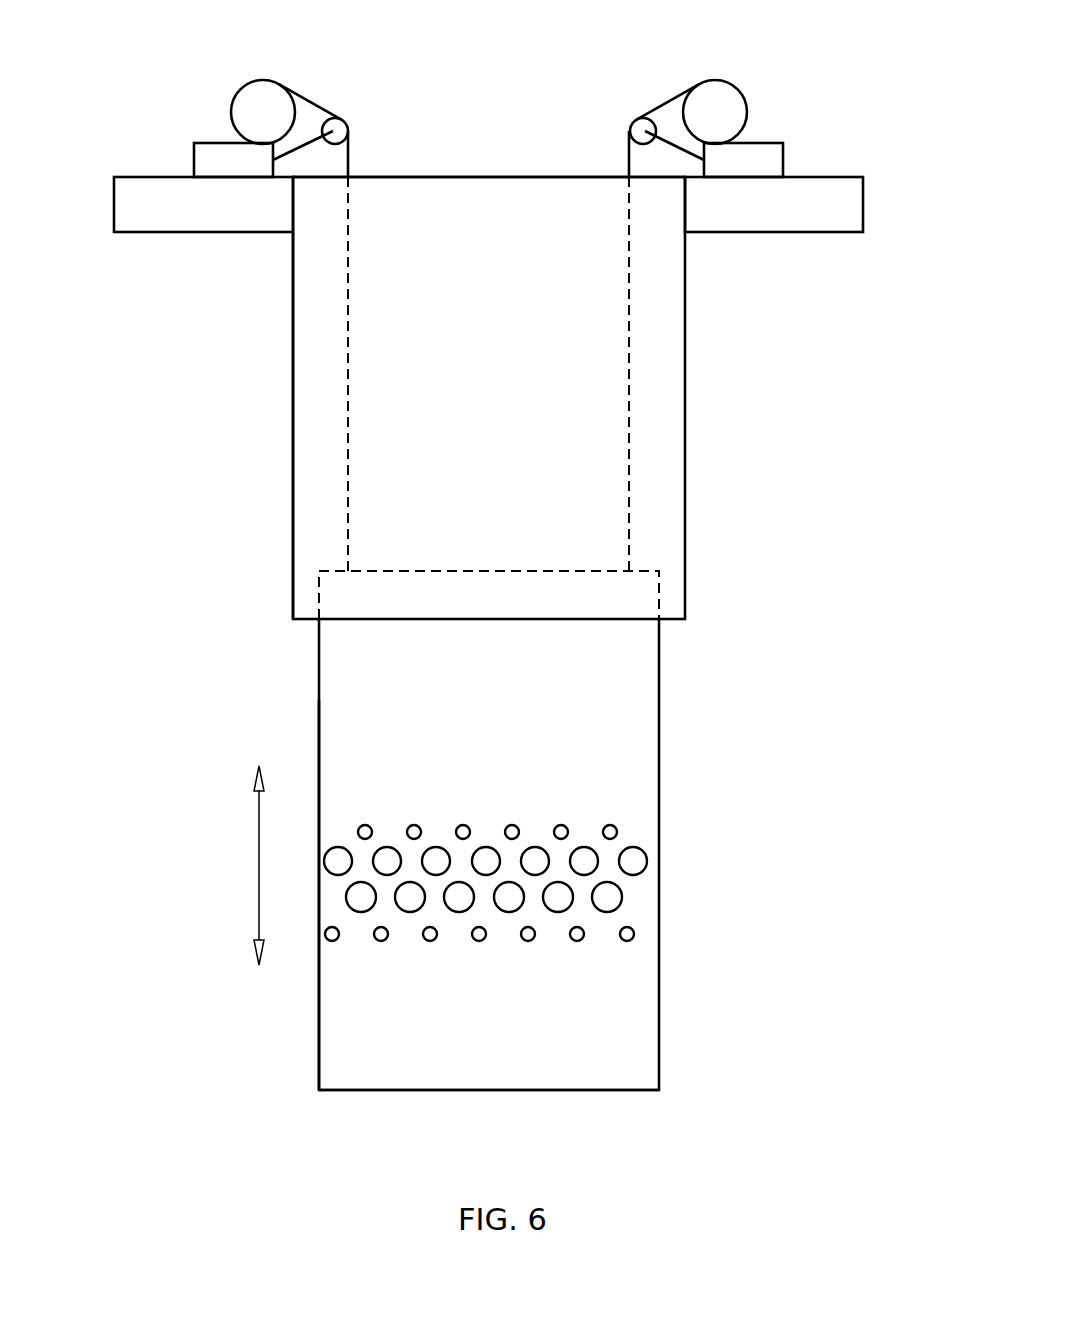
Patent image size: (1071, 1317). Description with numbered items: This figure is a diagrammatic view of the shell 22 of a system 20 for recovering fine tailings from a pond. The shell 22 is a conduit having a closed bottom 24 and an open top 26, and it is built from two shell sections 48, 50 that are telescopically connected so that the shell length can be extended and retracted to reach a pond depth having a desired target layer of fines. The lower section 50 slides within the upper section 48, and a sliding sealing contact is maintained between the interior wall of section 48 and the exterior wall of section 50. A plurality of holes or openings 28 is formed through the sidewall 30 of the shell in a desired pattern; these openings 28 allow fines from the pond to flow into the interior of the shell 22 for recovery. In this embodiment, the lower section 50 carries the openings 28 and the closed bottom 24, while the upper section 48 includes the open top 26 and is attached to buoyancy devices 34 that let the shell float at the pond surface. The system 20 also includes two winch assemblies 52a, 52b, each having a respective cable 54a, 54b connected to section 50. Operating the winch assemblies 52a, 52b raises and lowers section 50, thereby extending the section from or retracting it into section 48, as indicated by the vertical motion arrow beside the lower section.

The system 20 is at (123, 140).
The shell 22 is at (685, 415).
The closed bottom 24 is at (393, 1092).
The open top 26 is at (487, 177).
The openings 28 is at (622, 891).
The sidewall 30 is at (635, 1018).
The buoyancy device 34 is at (130, 215).
The section 48 is at (312, 422).
The section 50 is at (330, 1044).
The winch assembly 52a is at (263, 80).
The winch assembly 52b is at (742, 90).
The cable 54a is at (348, 343).
The cable 54b is at (629, 364).